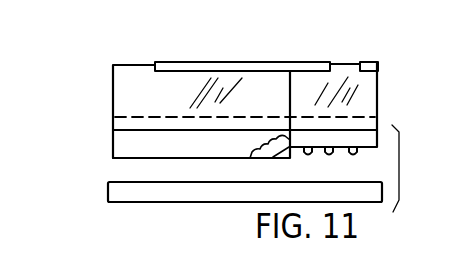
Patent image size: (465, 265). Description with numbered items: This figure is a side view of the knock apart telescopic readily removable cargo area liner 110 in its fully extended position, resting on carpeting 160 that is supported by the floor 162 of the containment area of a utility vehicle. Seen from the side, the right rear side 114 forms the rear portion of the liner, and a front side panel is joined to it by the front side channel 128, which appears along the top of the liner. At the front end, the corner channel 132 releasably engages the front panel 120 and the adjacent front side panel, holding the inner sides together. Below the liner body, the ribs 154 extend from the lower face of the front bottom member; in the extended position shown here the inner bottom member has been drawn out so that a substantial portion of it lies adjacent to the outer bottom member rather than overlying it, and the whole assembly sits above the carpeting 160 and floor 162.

The cargo area liner 110 is at (370, 36).
The right rear side 114 is at (112, 88).
The front panel 120 is at (380, 105).
The front side channel 128 is at (220, 62).
The corner channel 132 is at (372, 62).
The ribs 154 is at (357, 155).
The carpeting 160 is at (115, 175).
The floor 162 is at (108, 191).